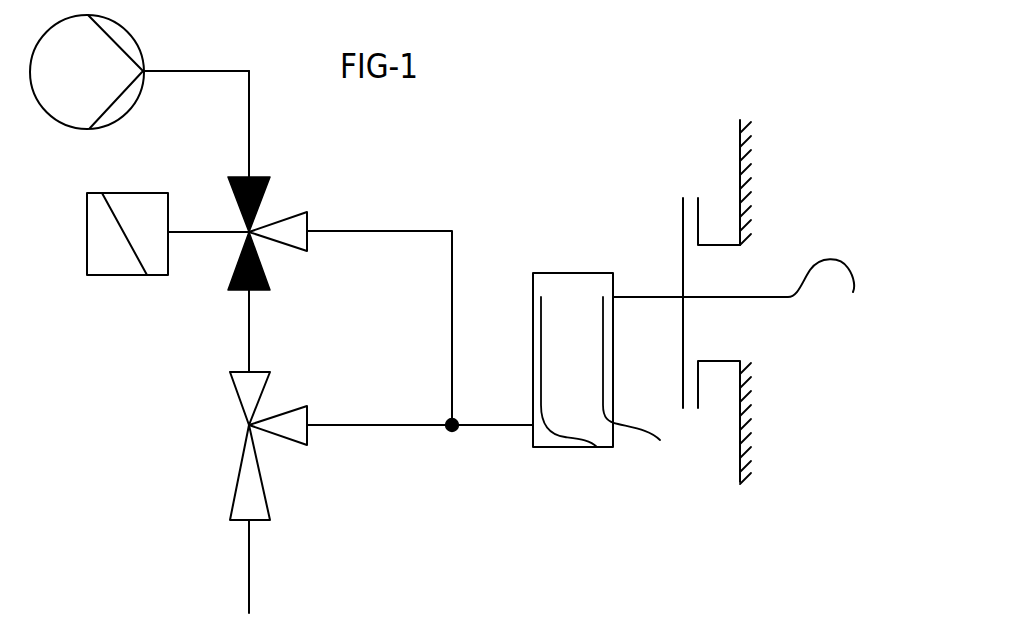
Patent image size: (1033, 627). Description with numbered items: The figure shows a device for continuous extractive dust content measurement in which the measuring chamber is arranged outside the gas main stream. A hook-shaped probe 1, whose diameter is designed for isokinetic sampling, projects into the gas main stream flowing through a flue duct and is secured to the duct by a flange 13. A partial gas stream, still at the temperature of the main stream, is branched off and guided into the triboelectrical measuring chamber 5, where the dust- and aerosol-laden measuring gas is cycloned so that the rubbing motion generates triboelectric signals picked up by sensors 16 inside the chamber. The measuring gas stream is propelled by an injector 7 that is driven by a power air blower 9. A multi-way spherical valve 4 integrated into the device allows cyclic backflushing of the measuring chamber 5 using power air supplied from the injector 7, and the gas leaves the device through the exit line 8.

The hook-shaped probe 1 is at (838, 260).
The multi-way spherical valve 4 is at (105, 276).
The triboelectrical measuring chamber 5 is at (533, 350).
The injector 7 is at (260, 405).
The gas exit line 8 is at (250, 554).
The power air blower 9 is at (130, 34).
The flange 13 is at (681, 223).
The sensors 16 is at (597, 447).